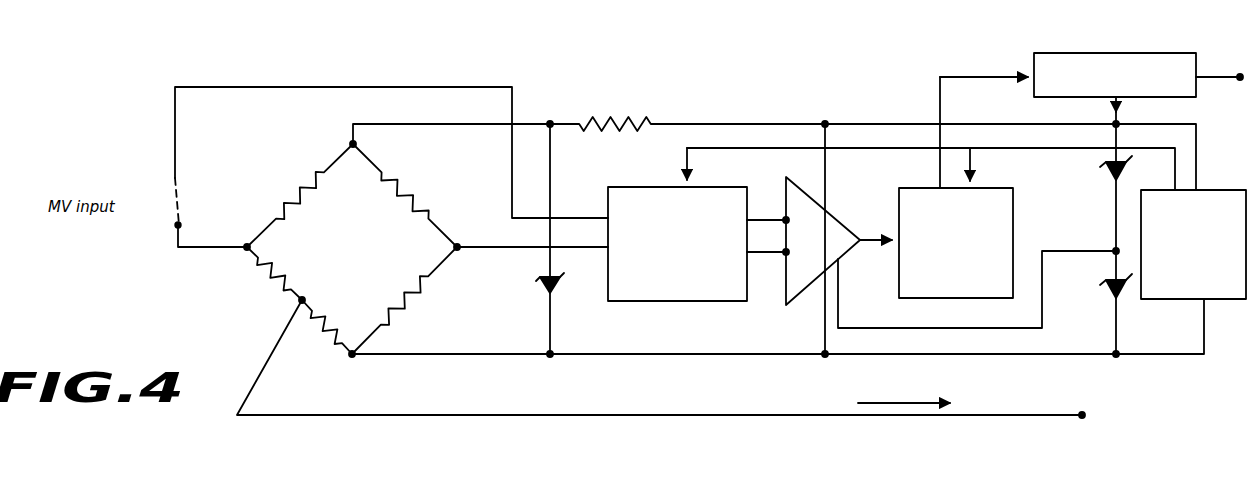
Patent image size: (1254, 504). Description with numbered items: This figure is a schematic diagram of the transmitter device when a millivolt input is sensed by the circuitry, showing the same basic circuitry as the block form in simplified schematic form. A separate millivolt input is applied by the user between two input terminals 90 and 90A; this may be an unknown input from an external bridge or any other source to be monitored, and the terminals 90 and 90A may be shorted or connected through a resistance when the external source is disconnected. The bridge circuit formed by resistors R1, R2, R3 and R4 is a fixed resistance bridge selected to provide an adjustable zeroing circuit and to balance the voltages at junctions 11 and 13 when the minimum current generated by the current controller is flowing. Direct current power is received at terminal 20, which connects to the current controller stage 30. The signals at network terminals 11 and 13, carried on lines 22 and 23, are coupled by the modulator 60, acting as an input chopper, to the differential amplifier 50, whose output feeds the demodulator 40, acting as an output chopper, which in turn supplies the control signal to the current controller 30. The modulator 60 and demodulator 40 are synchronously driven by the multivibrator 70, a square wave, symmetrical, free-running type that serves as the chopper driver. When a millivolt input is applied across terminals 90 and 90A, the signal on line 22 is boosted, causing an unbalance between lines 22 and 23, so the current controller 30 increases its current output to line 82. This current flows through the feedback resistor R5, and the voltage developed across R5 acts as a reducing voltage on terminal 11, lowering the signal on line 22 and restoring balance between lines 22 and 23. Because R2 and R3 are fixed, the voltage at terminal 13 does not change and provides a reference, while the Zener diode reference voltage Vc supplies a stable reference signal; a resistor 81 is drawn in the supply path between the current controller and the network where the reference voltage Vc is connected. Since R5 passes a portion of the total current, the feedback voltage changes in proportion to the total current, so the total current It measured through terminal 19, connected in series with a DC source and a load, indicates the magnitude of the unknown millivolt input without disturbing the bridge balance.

The network terminal 11 is at (245, 250).
The network terminal 13 is at (457, 250).
The terminal 19 is at (1082, 415).
The terminal 20 is at (1240, 77).
The line 22 is at (397, 87).
The line 23 is at (466, 252).
The current controller stage 30 is at (1030, 72).
The demodulator 40 is at (990, 298).
The differential amplifier 50 is at (808, 282).
The modulator 60 is at (715, 192).
The multivibrator 70 is at (1160, 299).
The resistor 81 is at (575, 122).
The line 82 is at (628, 355).
The input terminal 90 is at (173, 176).
The input terminal 90A is at (175, 228).
The bridge resistor R1 is at (280, 210).
The bridge resistor R2 is at (392, 178).
The bridge resistor R3 is at (398, 303).
The bridge resistor R4 is at (262, 262).
The feedback resistor R5 is at (312, 308).
The reference voltage Vc is at (545, 283).
The total current It is at (882, 401).